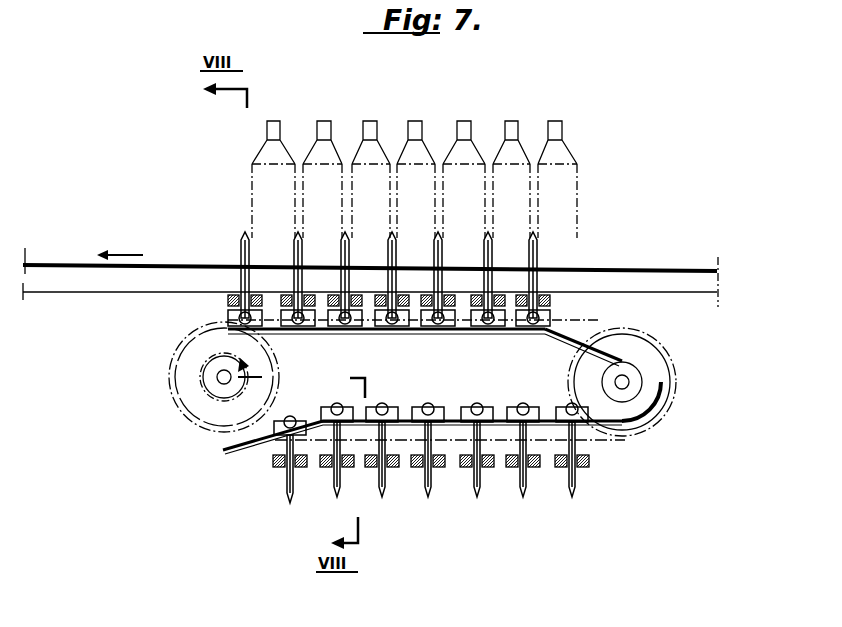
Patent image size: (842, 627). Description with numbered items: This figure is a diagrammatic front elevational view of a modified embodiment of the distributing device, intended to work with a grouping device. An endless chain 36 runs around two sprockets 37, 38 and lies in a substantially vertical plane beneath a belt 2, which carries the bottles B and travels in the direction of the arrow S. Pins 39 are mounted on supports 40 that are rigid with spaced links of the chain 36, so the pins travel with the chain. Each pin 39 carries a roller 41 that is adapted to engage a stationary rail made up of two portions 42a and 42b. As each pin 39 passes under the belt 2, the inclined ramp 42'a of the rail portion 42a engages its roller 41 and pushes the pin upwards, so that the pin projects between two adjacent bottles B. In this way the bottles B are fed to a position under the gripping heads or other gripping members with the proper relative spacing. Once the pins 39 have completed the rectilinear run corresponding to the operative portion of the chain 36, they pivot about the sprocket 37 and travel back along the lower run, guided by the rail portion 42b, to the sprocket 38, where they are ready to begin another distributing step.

The belt 2 is at (183, 265).
The arrow S is at (120, 245).
The bottles B is at (424, 152).
The endless chain 36 is at (190, 427).
The sprocket 37 is at (192, 388).
The sprocket 38 is at (655, 367).
The pins 39 is at (240, 232).
The supports 40 is at (228, 297).
The roller 41 is at (453, 331).
The rail portion 42a is at (505, 333).
The inclined ramp 42'a is at (603, 361).
The rail portion 42b is at (407, 423).